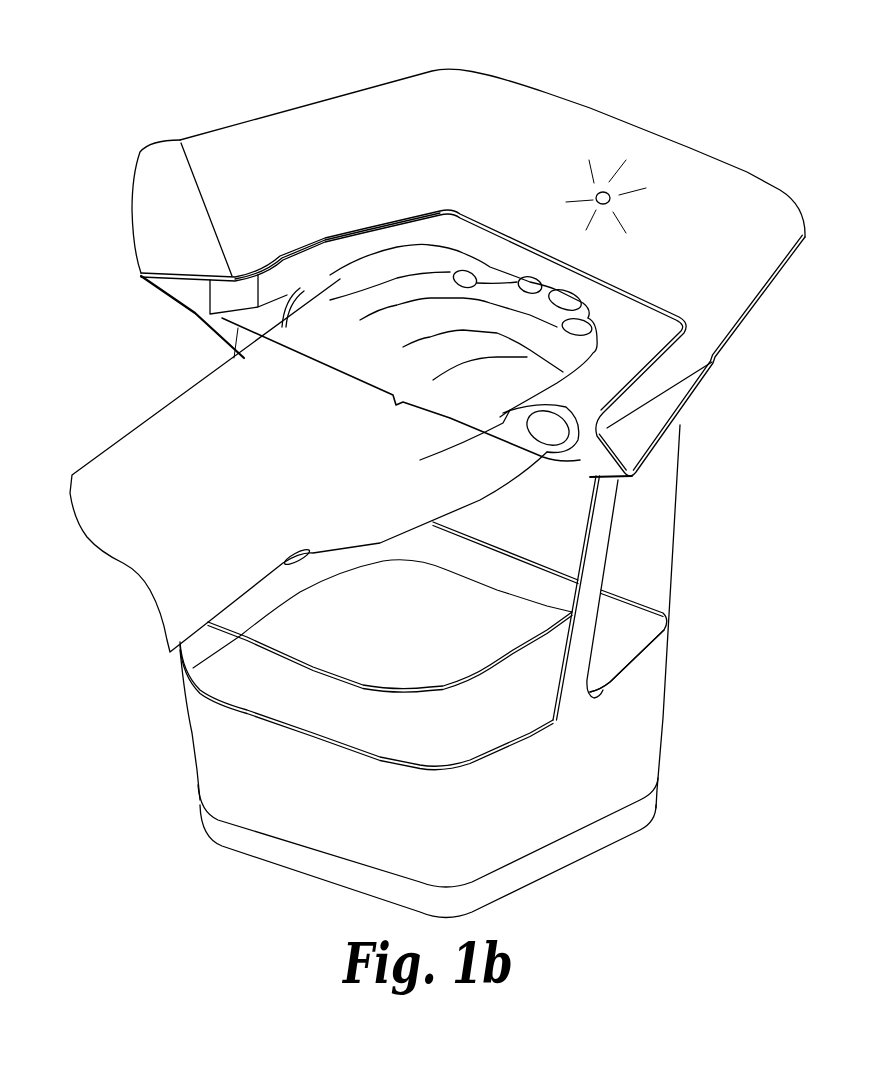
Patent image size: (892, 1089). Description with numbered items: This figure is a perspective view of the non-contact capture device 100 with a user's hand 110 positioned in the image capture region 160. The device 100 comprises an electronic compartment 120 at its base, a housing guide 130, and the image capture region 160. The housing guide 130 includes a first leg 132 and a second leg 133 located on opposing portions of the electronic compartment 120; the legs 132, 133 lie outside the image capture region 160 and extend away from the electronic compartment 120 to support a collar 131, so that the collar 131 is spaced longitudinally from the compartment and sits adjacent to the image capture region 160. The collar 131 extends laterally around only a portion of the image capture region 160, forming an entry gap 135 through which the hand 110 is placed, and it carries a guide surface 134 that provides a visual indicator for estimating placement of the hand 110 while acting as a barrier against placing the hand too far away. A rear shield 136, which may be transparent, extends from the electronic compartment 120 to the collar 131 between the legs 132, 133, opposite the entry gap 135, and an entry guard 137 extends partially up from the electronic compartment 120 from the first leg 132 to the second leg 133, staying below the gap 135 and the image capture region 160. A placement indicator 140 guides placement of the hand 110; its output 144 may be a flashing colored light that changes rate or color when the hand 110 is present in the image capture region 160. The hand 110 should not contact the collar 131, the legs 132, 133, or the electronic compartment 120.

The non-contact capture device 100 is at (715, 60).
The user's hand 110 is at (150, 575).
The electronic compartment 120 is at (186, 784).
The housing guide 130 is at (727, 418).
The collar 131 is at (143, 203).
The first leg 132 is at (579, 657).
The second leg 133 is at (236, 345).
The guide surface 134 is at (305, 268).
The entry gap 135 is at (401, 389).
The rear shield 136 is at (659, 532).
The entry guard 137 is at (297, 712).
The placement indicator 140 is at (565, 188).
The output 144 is at (611, 201).
The image capture region 160 is at (396, 270).